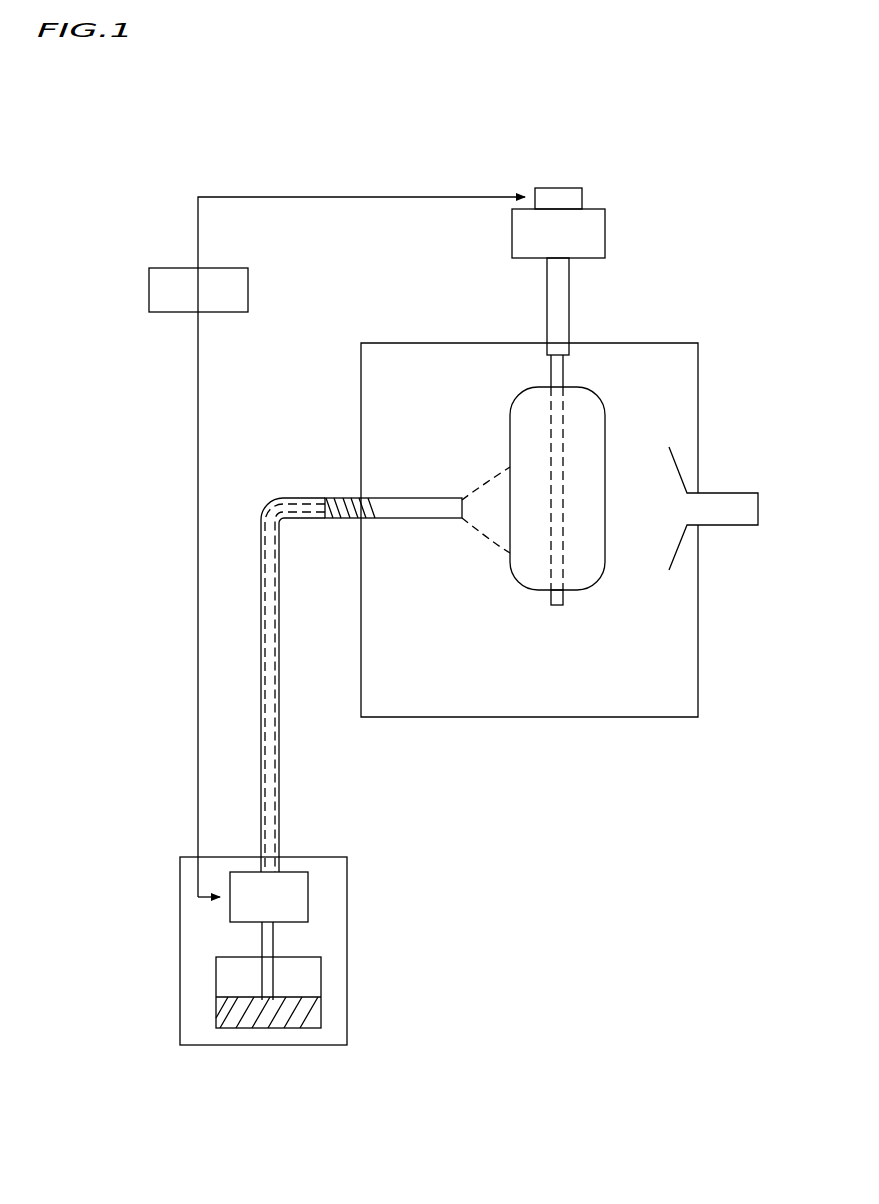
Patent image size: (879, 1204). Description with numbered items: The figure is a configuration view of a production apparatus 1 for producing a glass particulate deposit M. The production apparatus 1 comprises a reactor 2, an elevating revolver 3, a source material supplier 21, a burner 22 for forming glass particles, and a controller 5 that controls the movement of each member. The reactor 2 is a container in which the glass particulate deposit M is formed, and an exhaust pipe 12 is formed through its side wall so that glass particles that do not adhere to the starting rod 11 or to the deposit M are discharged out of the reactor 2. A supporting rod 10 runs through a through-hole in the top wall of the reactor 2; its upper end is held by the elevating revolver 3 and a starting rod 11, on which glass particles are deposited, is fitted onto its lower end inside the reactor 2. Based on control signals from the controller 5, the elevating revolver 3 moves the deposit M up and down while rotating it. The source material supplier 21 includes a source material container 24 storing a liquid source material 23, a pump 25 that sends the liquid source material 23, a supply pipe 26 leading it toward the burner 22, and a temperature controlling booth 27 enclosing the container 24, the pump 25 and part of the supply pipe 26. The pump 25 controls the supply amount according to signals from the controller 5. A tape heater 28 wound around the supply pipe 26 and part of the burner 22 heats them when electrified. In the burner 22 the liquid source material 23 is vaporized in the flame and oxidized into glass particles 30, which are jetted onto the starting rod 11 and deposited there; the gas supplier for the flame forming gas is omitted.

The production apparatus 1 is at (606, 147).
The reactor 2 is at (698, 362).
The elevating revolver 3 is at (605, 220).
The controller 5 is at (163, 268).
The supporting rod 10 is at (569, 300).
The starting rod 11 is at (563, 370).
The exhaust pipe 12 is at (728, 493).
The glass particulate deposit M is at (510, 421).
The source material supplier 21 is at (369, 851).
The burner 22 is at (420, 498).
The liquid source material 23 is at (321, 1012).
The source material container 24 is at (321, 972).
The pump 25 is at (308, 893).
The supply pipe 26 is at (277, 779).
The temperature controlling booth 27 is at (347, 933).
The tape heater 28 is at (314, 643).
The glass particles 30 is at (480, 522).